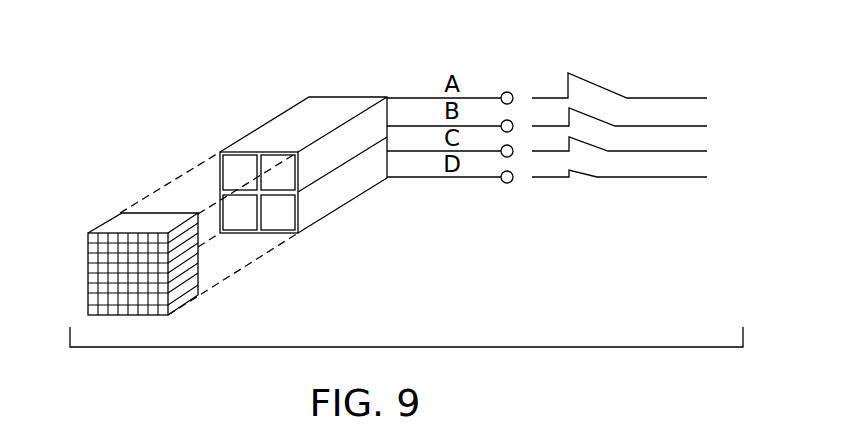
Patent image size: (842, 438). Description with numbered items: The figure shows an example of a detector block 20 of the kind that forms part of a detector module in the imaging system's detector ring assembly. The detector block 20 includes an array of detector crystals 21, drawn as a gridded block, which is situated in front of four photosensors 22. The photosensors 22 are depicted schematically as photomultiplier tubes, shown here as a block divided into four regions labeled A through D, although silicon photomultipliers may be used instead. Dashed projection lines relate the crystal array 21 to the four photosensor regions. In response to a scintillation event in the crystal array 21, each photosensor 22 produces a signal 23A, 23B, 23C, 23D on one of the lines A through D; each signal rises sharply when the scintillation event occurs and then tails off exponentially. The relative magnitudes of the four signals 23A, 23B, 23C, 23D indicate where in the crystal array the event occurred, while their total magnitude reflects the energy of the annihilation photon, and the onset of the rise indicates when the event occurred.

The detector block 20 is at (258, 113).
The array of detector crystals 21 is at (88, 279).
The photosensors 22 is at (345, 197).
The signal 23A is at (665, 97).
The signal 23B is at (693, 126).
The signal 23C is at (704, 152).
The signal 23D is at (708, 178).